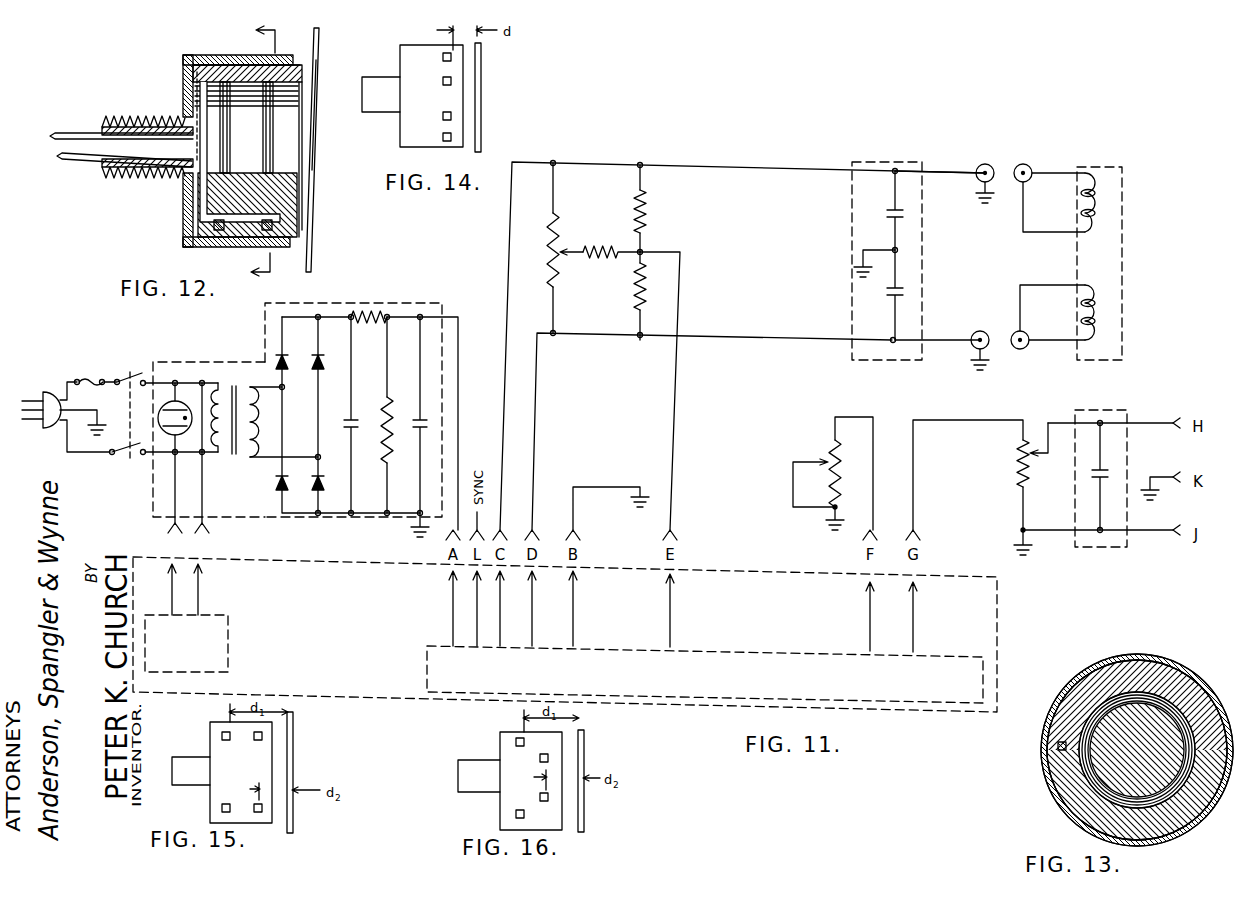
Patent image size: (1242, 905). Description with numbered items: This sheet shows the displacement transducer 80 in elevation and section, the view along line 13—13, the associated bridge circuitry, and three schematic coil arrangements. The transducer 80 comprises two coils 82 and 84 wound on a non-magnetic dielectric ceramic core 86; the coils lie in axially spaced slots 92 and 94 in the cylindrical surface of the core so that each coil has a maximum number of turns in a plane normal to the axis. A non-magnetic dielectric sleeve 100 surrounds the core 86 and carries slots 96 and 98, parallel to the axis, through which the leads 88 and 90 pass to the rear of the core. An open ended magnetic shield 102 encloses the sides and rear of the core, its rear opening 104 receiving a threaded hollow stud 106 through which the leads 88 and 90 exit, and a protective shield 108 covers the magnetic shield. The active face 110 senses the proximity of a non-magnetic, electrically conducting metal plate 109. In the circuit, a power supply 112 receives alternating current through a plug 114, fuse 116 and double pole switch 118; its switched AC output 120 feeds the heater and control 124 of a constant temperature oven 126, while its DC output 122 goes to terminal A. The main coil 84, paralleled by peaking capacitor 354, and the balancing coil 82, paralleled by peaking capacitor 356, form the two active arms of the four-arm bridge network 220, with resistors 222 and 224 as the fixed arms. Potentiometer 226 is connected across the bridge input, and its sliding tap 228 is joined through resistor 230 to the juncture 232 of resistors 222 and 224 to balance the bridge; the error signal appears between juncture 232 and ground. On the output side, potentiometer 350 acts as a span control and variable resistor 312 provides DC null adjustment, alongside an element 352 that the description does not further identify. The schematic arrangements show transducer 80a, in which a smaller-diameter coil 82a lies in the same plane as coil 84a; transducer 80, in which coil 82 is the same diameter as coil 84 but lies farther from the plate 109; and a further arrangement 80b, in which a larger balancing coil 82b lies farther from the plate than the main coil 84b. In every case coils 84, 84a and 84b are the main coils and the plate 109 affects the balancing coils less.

In FIG. 12, the displacement transducer 80 is at (180, 93).
In FIG. 15, the displacement transducer 80 is at (211, 745).
In FIG. 11, the displacement transducer 80 is at (1128, 265).
In FIG. 14, the transducer 80a is at (400, 57).
In FIG. 16, the transducer assembly (variant b) 80b is at (500, 800).
In FIG. 12, the balancing coil 82 is at (229, 139).
In FIG. 15, the balancing coil 82 is at (224, 772).
In FIG. 11, the balancing coil 82 is at (1106, 312).
In FIG. 14, the balancing coil 82a is at (443, 81).
In FIG. 16, the balancing coil 82b is at (516, 744).
In FIG. 12, the main coil 84 is at (271, 137).
In FIG. 15, the main coil 84 is at (258, 744).
In FIG. 13, the main coil 84 is at (1137, 690).
In FIG. 11, the main coil 84 is at (1106, 222).
In FIG. 14, the main coil 84a is at (443, 58).
In FIG. 16, the main coil 84b is at (549, 758).
In FIG. 12, the core 86 is at (300, 158).
In FIG. 13, the core 86 is at (1190, 672).
In FIG. 12, the lead 88 is at (81, 132).
In FIG. 11, the lead 88 is at (1046, 286).
In FIG. 12, the lead 90 is at (79, 164).
In FIG. 11, the lead 90 is at (1046, 176).
In FIG. 12, the slot 92 is at (214, 194).
In FIG. 12, the slot 94 is at (259, 197).
In FIG. 12, the slot 96 is at (203, 66).
In FIG. 12, the slot 98 is at (199, 228).
In FIG. 13, the slot 98 is at (1062, 745).
In FIG. 12, the sleeve 100 is at (302, 72).
In FIG. 13, the sleeve 100 is at (1086, 681).
In FIG. 12, the magnetic shield 102 is at (219, 250).
In FIG. 13, the magnetic shield 102 is at (1170, 838).
In FIG. 12, the opening 104 is at (185, 184).
In FIG. 12, the threaded hollow stud 106 is at (127, 180).
In FIG. 12, the protective shield 108 is at (198, 56).
In FIG. 13, the protective shield 108 is at (1063, 800).
In FIG. 12, the metal plate 109 is at (312, 264).
In FIG. 14, the metal plate 109 is at (480, 106).
In FIG. 15, the metal plate 109 is at (294, 749).
In FIG. 16, the metal plate 109 is at (585, 806).
In FIG. 12, the active face 110 is at (313, 131).
In FIG. 12, the section line 13— 13 is at (275, 158).
In FIG. 11, the power supply 112 is at (222, 362).
In FIG. 11, the plug 114 is at (46, 432).
In FIG. 11, the fuse 116 is at (96, 378).
In FIG. 11, the double pole switch 118 is at (136, 378).
In FIG. 11, the switched AC output 120 is at (196, 535).
In FIG. 11, the DC output 122 is at (458, 362).
In FIG. 11, the heater and control 124 is at (208, 616).
In FIG. 11, the constant temperature oven 126 is at (334, 564).
In FIG. 11, the bridge network 220 is at (935, 279).
In FIG. 11, the resistor 222 is at (648, 218).
In FIG. 11, the resistor 224 is at (636, 300).
In FIG. 11, the potentiometer 226 is at (558, 220).
In FIG. 11, the sliding tap 228 is at (572, 250).
In FIG. 11, the resistor 230 is at (588, 258).
In FIG. 11, the juncture 232 is at (644, 252).
In FIG. 11, the variable resistor 312 is at (828, 448).
In FIG. 11, the potentiometer 350 is at (1017, 479).
In FIG. 11, the capacitor network 352 is at (1086, 410).
In FIG. 11, the peaking capacitor 354 is at (887, 212).
In FIG. 11, the peaking capacitor 356 is at (887, 290).